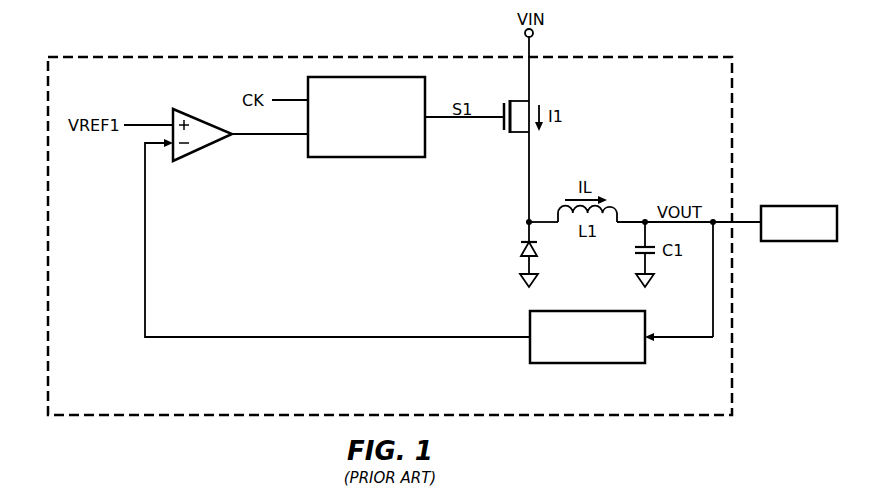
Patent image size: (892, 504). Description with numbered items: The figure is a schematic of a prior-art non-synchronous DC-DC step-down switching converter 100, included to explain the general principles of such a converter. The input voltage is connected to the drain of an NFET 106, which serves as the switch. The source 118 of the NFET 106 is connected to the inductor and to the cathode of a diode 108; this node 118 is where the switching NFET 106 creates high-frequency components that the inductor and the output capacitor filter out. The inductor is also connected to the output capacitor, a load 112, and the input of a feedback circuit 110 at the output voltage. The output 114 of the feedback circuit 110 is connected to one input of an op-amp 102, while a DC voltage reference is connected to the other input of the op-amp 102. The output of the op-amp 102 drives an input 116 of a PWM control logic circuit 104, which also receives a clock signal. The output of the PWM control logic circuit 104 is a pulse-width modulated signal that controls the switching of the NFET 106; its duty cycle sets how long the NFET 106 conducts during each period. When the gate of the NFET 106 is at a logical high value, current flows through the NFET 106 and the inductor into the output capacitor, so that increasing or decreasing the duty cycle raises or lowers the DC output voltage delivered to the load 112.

The non-synchronous DC-DC step-down switching converter 100 is at (235, 53).
The op-amp 102 is at (203, 150).
The PWM control logic circuit 104 is at (365, 158).
The NFET 106 is at (504, 127).
The diode 108 is at (521, 244).
The feedback circuit 110 is at (588, 364).
The load 112 is at (797, 242).
The output of the feedback circuit 114 is at (300, 339).
The input of the PWM control logic circuit 116 is at (285, 136).
The source of NFET (node) 118 is at (527, 220).